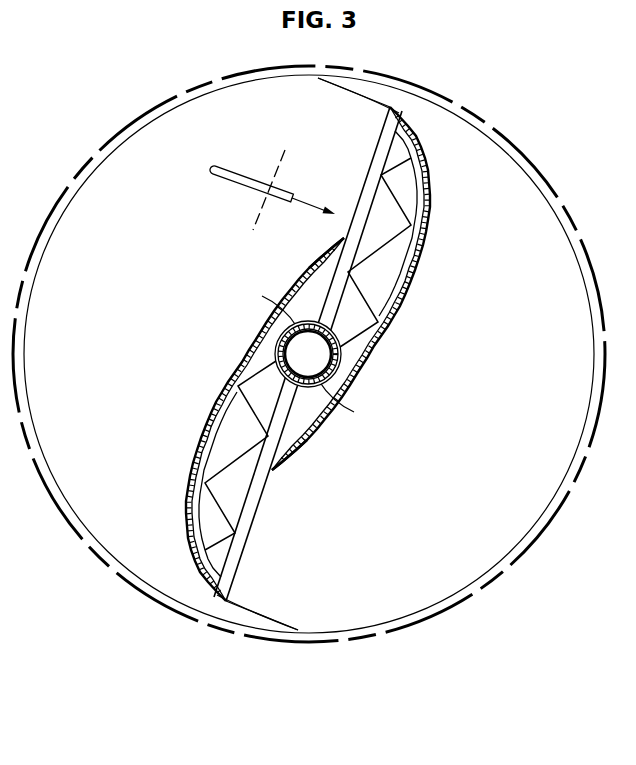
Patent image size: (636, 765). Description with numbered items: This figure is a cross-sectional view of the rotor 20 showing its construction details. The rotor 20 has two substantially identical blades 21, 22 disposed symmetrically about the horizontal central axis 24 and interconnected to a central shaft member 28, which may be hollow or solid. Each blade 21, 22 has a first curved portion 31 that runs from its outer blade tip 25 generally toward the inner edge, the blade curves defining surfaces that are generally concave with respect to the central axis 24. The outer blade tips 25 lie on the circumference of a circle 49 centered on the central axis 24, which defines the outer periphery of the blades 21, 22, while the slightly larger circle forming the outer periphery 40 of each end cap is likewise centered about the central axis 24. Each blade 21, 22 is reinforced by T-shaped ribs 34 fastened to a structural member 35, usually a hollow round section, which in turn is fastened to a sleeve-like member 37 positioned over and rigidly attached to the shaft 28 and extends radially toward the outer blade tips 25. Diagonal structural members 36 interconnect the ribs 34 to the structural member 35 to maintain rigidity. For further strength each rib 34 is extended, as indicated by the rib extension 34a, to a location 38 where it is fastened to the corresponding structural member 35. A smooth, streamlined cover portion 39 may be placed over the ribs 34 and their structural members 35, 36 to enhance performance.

The rotor 20 is at (86, 573).
The blade 21 is at (431, 190).
The blade 22 is at (227, 404).
The central axis 24 is at (310, 355).
The outer blade tip 25 is at (318, 79).
The central shaft member 28 is at (280, 348).
The curved portion 31 is at (422, 150).
The rib 34 is at (391, 107).
The rib extension 34a is at (319, 260).
The structural member 35 is at (363, 203).
The diagonal structural member 36 is at (398, 264).
The sleeve-like member 37 is at (283, 305).
The fastening location 38 is at (344, 238).
The cover portion 39 is at (212, 172).
The outer periphery 40 is at (587, 467).
The circle 49 is at (399, 623).